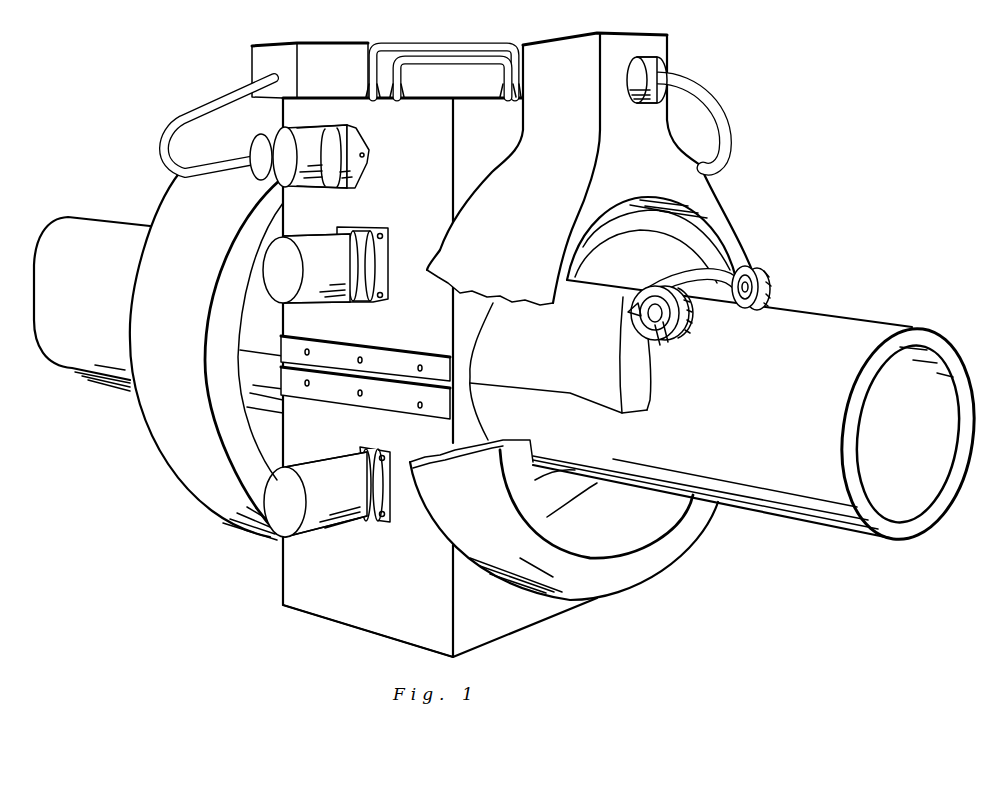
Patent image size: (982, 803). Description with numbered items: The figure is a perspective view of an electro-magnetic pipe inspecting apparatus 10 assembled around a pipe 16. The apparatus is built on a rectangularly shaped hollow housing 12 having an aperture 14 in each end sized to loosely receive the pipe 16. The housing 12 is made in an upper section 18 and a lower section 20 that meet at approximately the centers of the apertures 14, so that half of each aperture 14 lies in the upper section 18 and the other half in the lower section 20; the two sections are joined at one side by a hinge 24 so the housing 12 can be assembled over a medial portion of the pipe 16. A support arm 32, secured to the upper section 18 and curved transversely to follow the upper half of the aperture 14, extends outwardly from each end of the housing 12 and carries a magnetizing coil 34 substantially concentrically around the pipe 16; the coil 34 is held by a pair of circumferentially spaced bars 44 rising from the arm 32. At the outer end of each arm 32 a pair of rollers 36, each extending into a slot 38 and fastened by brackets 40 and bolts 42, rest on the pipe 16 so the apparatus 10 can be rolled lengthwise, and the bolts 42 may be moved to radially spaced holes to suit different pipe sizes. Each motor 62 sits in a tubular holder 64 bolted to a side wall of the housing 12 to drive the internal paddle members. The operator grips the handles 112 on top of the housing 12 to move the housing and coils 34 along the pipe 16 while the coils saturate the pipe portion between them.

The electro-magnetic pipe inspecting apparatus 10 is at (300, 612).
The housing 12 is at (293, 564).
The aperture 14 is at (488, 420).
The pipe 16 is at (878, 332).
The upper section 18 is at (427, 190).
The lower section 20 is at (400, 580).
The hinge 24 is at (350, 393).
The support arm 32 is at (258, 324).
The magnetizing coil 34 is at (157, 440).
The roller 36 is at (774, 297).
The slot 38 is at (631, 318).
The bracket 40 is at (757, 274).
The bolt 42 is at (647, 343).
The bar 44 is at (731, 255).
The motor 62 is at (335, 254).
The tubular holder 64 is at (386, 262).
The handle 112 is at (445, 46).